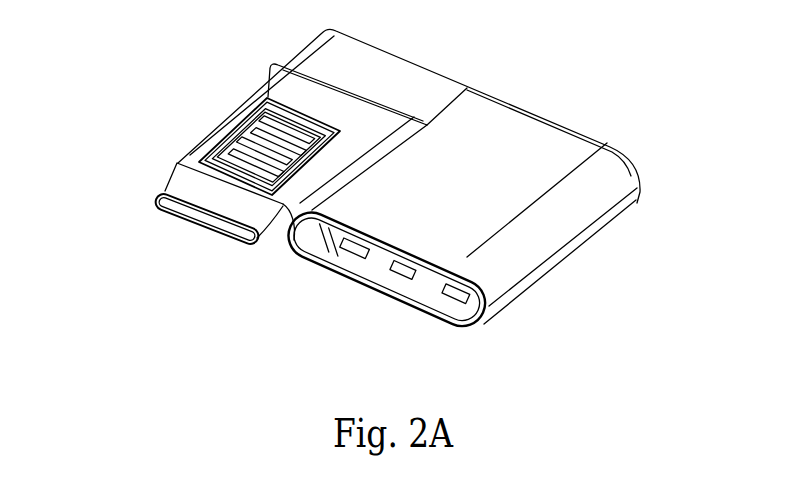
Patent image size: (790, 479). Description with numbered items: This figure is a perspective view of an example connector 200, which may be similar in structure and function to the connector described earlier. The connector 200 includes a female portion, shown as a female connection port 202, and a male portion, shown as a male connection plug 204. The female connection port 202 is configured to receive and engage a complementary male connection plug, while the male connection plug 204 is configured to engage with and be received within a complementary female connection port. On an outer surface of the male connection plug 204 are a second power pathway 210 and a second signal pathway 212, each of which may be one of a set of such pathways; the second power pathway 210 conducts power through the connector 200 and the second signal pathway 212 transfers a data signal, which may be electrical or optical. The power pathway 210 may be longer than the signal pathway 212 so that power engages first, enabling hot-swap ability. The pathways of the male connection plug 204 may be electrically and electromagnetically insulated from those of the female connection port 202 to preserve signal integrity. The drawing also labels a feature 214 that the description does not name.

The connector 200 is at (163, 53).
The female connection port 202 is at (572, 268).
The male connection plug 204 is at (175, 231).
The second power pathway 210 is at (237, 153).
The second signal pathway 212 is at (265, 140).
The receptacle connector 214 is at (370, 258).